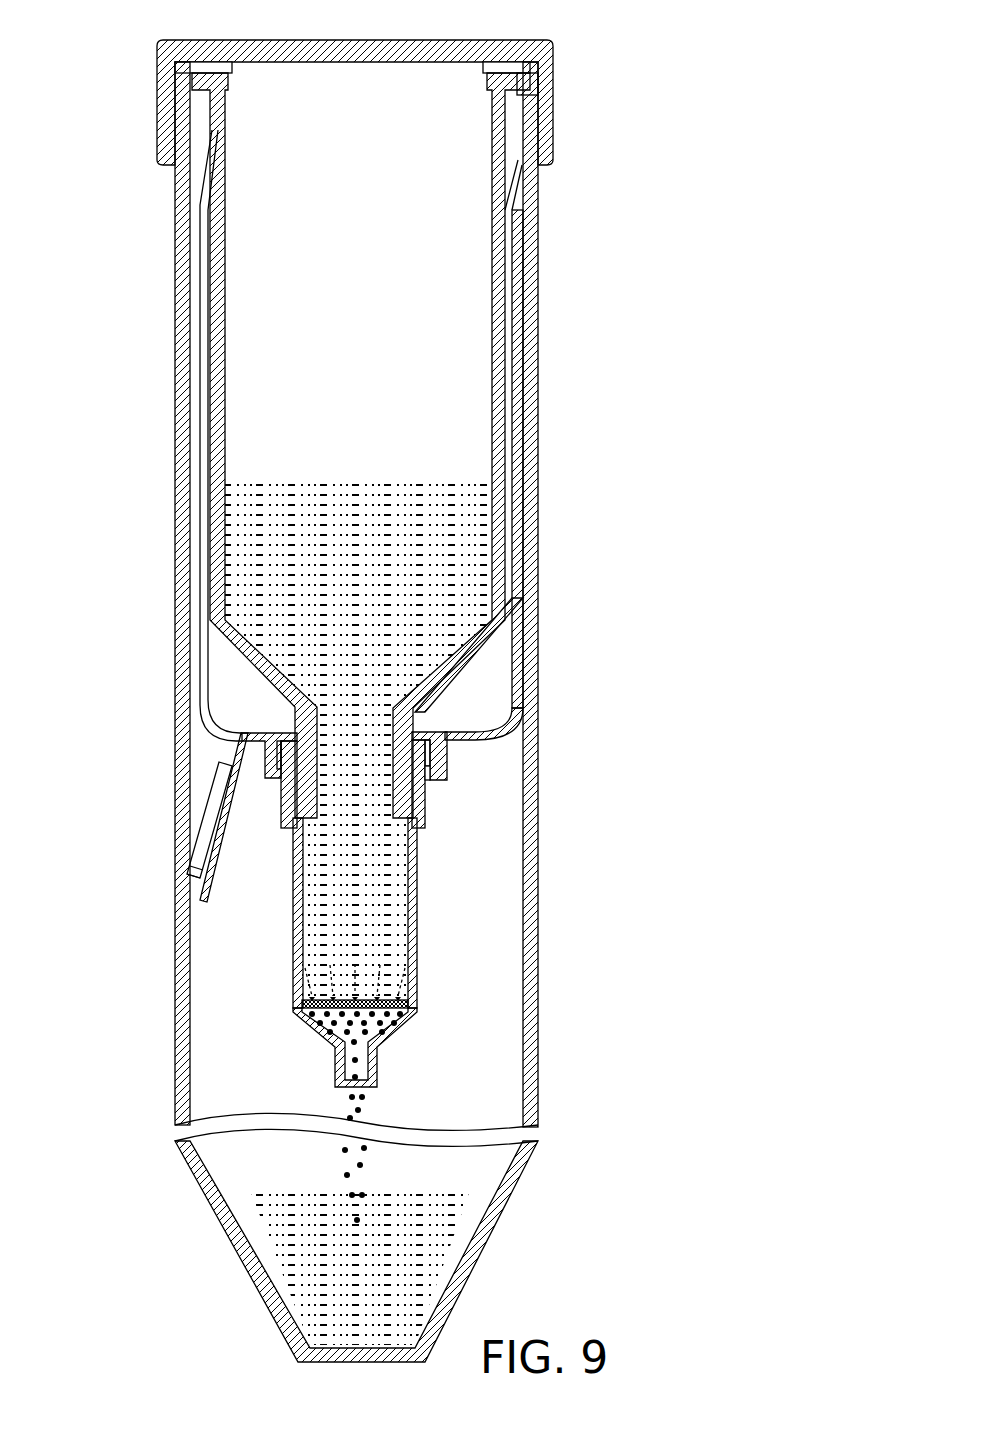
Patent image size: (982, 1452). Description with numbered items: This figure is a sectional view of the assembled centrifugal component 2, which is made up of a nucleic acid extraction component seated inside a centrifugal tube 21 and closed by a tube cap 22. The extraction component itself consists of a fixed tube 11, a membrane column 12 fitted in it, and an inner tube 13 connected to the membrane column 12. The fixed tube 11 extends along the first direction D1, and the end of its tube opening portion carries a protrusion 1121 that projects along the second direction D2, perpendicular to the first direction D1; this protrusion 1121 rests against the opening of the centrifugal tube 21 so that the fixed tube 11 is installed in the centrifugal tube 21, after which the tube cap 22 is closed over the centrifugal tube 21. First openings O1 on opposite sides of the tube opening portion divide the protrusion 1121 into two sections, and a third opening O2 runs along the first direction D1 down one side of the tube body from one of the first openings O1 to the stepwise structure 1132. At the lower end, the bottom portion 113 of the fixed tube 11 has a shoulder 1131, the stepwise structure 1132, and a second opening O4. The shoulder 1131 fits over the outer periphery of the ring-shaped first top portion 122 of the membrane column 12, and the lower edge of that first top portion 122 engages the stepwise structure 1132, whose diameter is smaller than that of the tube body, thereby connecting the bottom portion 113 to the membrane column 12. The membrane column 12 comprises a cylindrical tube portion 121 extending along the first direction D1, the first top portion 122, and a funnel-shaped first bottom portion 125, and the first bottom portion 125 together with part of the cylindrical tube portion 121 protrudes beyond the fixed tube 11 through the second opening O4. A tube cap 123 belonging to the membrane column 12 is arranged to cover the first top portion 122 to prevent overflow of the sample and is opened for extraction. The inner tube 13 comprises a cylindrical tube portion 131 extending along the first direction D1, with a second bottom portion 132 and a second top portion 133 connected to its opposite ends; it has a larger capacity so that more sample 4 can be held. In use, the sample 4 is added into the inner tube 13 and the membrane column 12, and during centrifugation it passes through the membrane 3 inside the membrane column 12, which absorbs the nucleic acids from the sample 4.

The centrifugal component 2 is at (716, 56).
The sample 4 is at (458, 540).
The tube cap 22 is at (162, 70).
The protrusion 1121 is at (193, 62).
The second top portion 133 is at (537, 100).
The fixed tube 11 is at (524, 593).
The centrifugal tube 21 is at (176, 388).
The cylindrical tube portion 131 is at (508, 345).
The inner tube 13 is at (471, 655).
The second bottom portion 132 is at (435, 690).
The first openings O1 is at (203, 187).
The third opening O2 is at (215, 563).
The second opening O4 is at (283, 750).
The bottom portion 113 is at (463, 781).
The shoulder 1131 is at (450, 745).
The stepwise structure 1132 is at (445, 795).
The first top portion 122 is at (428, 772).
The tube cap 123 is at (218, 802).
The membrane column 12 is at (443, 952).
The cylindrical tube portion 121 is at (420, 870).
The first bottom portion 125 is at (395, 1022).
The membrane 3 is at (414, 1000).
The first direction D1 is at (690, 1140).
The second direction D2 is at (690, 1140).